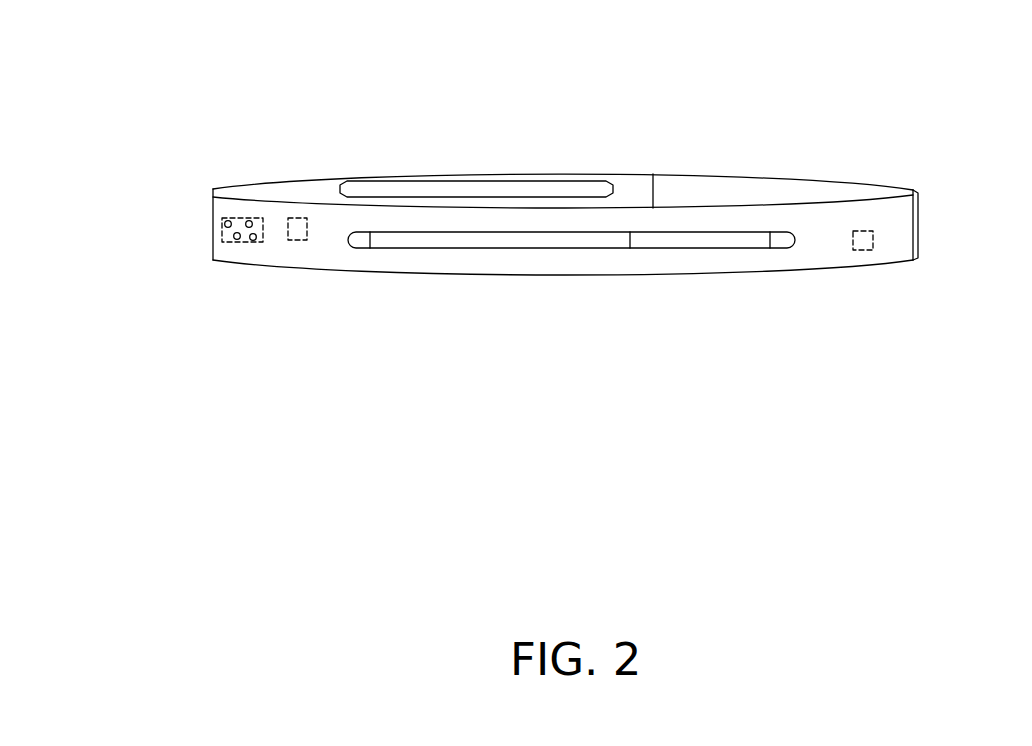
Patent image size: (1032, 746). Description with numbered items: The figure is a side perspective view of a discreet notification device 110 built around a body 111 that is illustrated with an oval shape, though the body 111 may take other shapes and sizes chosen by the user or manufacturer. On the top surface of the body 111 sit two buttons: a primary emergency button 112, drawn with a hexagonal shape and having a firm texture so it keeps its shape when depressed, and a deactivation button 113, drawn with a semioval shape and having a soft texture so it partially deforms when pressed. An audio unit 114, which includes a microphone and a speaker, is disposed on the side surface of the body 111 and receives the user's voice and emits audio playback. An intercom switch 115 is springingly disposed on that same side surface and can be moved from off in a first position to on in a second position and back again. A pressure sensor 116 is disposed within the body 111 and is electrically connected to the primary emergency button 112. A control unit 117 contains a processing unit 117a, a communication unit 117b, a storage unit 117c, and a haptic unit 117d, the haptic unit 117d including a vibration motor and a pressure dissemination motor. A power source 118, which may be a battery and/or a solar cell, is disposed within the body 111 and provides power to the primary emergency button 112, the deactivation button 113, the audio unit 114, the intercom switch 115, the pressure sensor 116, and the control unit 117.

The discreet notification device 110 is at (247, 77).
The body 111 is at (229, 191).
The primary emergency button 112 is at (506, 169).
The deactivation button 113 is at (749, 172).
The audio unit 114 is at (930, 222).
The intercom switch 115 is at (788, 250).
The pressure sensor 116 is at (298, 241).
The control unit 117 is at (221, 240).
The processing unit 117a is at (225, 224).
The communication unit 117b is at (246, 221).
The storage unit 117c is at (237, 239).
The haptic unit 117d is at (253, 240).
The power source 118 is at (857, 250).